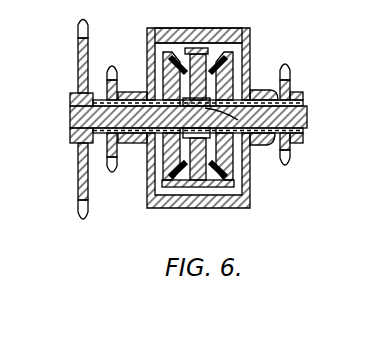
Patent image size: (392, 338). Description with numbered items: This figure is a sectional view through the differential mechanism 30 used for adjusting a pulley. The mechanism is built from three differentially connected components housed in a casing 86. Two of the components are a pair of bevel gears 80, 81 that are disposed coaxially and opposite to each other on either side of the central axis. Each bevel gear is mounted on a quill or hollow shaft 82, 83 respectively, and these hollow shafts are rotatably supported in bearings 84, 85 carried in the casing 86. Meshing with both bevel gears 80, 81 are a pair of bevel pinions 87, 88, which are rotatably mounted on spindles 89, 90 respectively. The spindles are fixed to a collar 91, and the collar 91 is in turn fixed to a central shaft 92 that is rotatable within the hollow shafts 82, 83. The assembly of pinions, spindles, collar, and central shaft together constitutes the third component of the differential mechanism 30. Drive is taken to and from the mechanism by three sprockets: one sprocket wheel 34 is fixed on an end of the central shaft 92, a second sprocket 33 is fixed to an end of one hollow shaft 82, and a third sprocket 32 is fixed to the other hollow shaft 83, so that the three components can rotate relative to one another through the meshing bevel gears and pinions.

The differential mechanism 30 is at (258, 36).
The third sprocket 32 is at (290, 73).
The second sprocket 33 is at (111, 70).
The sprocket wheel 34 is at (78, 40).
The bevel gear 80 is at (167, 72).
The bevel gear 81 is at (229, 72).
The hollow shaft 82 is at (136, 93).
The hollow shaft 83 is at (261, 92).
The bearing 84 is at (135, 143).
The bearing 85 is at (264, 145).
The casing 86 is at (156, 30).
The bevel pinion 87 is at (211, 55).
The bevel pinion 88 is at (212, 180).
The spindle 89 is at (195, 48).
The spindle 90 is at (196, 178).
The collar 91 is at (225, 117).
The central shaft 92 is at (307, 111).